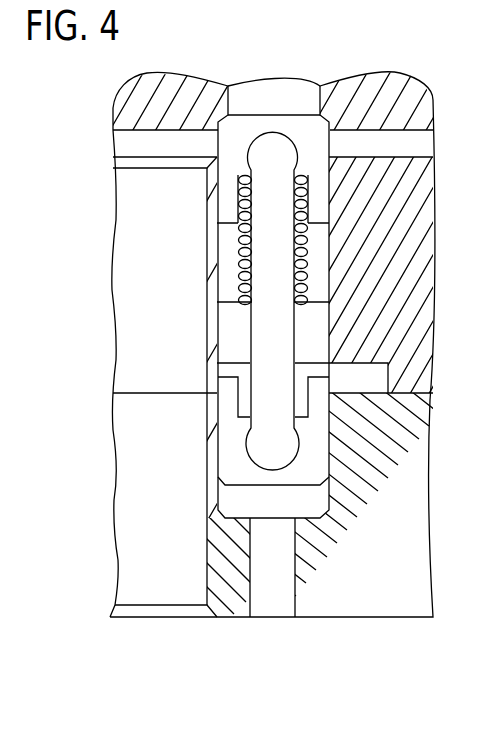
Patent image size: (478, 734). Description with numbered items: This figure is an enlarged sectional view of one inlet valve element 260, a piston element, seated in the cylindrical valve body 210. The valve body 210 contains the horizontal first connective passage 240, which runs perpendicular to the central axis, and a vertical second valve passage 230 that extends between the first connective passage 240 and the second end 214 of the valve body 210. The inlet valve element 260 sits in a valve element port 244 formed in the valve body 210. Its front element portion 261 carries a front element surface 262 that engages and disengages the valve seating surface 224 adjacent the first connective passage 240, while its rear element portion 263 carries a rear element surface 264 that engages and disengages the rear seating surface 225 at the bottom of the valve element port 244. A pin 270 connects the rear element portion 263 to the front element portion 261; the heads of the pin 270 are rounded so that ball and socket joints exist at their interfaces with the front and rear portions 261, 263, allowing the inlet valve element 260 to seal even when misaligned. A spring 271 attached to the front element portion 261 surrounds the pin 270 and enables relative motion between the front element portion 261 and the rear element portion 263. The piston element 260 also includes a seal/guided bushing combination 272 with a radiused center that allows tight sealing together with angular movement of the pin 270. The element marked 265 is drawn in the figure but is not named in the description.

The cylindrical valve body 210 is at (125, 105).
The first connective passage 240 is at (130, 145).
The valve seating surface 224 is at (223, 125).
The front element surface 262 is at (273, 113).
The front element portion 261 is at (322, 195).
The inlet valve element 260 is at (228, 205).
The spring 271 is at (243, 248).
The seal/guided bushing combination 272 is at (235, 328).
The pin 270 is at (275, 330).
The collar 265 is at (243, 417).
The rear element portion 263 is at (240, 468).
The rear seating surface 225 is at (240, 520).
The valve element port 244 is at (305, 503).
The second valve passage 230 is at (162, 587).
The rear element surface 264 is at (268, 485).
The second end 214 is at (368, 587).